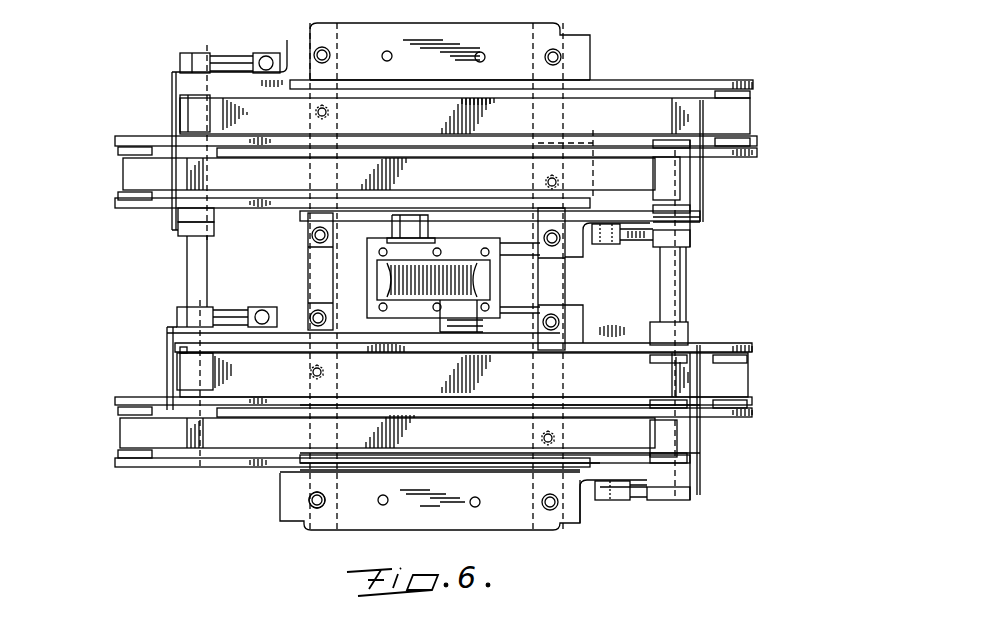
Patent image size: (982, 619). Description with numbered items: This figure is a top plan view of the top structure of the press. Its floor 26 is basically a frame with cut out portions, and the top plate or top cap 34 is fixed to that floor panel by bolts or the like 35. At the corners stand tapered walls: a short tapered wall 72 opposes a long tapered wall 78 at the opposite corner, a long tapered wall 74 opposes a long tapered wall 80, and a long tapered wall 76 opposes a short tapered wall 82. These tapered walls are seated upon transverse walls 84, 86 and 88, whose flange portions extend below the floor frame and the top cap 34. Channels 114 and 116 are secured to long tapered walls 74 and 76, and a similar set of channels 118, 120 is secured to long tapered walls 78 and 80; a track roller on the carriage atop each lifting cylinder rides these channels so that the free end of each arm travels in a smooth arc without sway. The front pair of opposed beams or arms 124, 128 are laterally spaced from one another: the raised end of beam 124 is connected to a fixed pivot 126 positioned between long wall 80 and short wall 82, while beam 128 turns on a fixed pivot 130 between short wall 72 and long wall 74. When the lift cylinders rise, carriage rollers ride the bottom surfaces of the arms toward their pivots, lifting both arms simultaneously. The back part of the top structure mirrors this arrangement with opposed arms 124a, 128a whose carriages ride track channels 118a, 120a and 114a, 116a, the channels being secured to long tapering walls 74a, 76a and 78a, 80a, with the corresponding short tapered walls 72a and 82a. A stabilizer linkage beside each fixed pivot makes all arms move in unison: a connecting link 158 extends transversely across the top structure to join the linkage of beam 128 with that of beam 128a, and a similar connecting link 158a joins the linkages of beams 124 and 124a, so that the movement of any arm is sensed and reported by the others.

The floor 26 is at (573, 521).
The top plate 34 is at (517, 531).
The bolts 35 is at (313, 503).
The short tapered wall 72 is at (690, 478).
The short tapered wall 72a is at (700, 217).
The long tapered wall 74 is at (750, 416).
The long tapered wall 74a is at (737, 158).
The long tapered wall 76 is at (748, 345).
The long tapered wall 76a is at (732, 84).
The long tapered wall 78 is at (158, 467).
The long tapered wall 78a is at (165, 210).
The long tapered wall 80 is at (115, 401).
The long tapered wall 80a is at (137, 141).
The short tapered wall 82 is at (173, 333).
The short tapered wall 82a is at (180, 82).
The transverse wall 84 is at (493, 472).
The transverse wall 86 is at (472, 407).
The transverse wall 88 is at (413, 349).
The channel 114 is at (748, 363).
The track channel 114a is at (752, 98).
The channel 116 is at (748, 402).
The track channel 116a is at (752, 143).
The channel 118 is at (115, 452).
The track channel 118a is at (117, 196).
The channel 120 is at (117, 413).
The track channel 120a is at (117, 152).
The beam 124 is at (464, 375).
The arm 124a is at (742, 123).
The fixed pivot 126 is at (182, 353).
The beam 128 is at (273, 433).
The arm 128a is at (127, 172).
The fixed pivot 130 is at (690, 458).
The connecting link 158 is at (672, 287).
The connecting link 158a is at (190, 277).